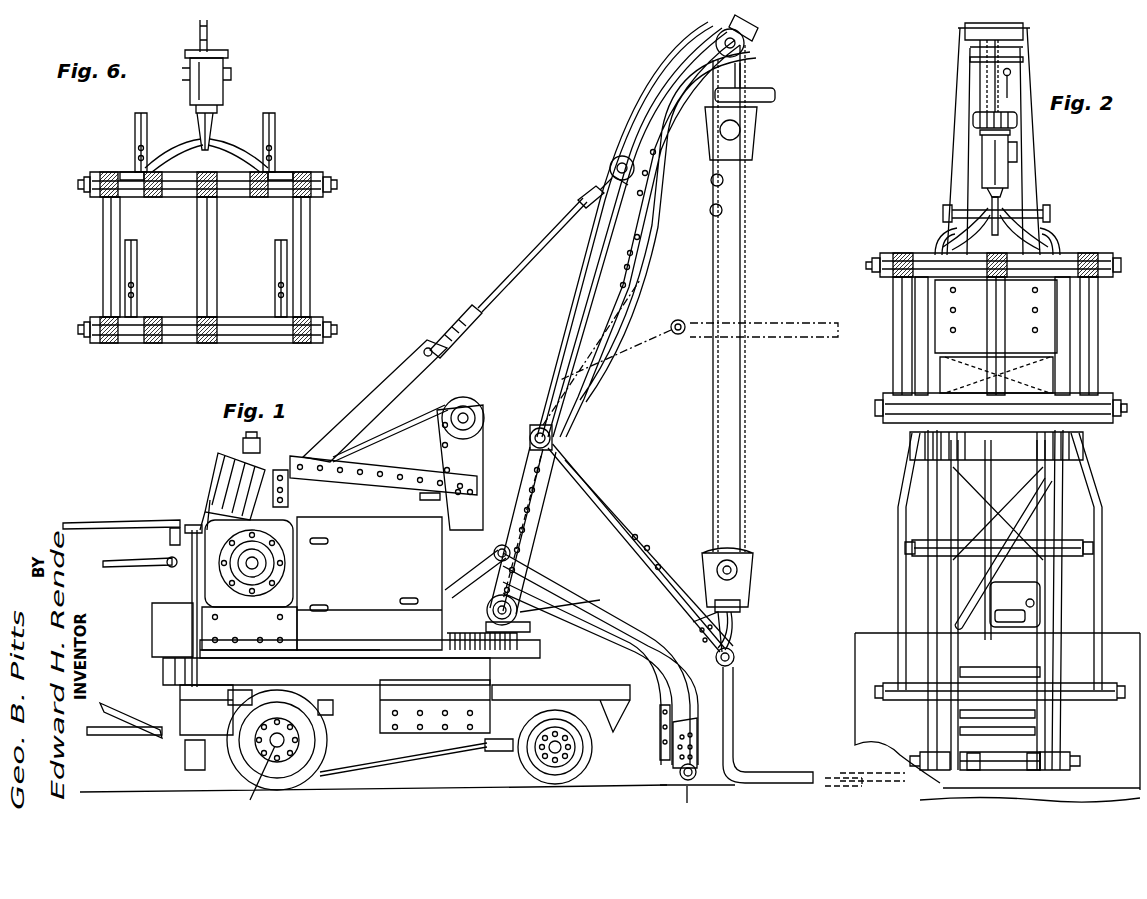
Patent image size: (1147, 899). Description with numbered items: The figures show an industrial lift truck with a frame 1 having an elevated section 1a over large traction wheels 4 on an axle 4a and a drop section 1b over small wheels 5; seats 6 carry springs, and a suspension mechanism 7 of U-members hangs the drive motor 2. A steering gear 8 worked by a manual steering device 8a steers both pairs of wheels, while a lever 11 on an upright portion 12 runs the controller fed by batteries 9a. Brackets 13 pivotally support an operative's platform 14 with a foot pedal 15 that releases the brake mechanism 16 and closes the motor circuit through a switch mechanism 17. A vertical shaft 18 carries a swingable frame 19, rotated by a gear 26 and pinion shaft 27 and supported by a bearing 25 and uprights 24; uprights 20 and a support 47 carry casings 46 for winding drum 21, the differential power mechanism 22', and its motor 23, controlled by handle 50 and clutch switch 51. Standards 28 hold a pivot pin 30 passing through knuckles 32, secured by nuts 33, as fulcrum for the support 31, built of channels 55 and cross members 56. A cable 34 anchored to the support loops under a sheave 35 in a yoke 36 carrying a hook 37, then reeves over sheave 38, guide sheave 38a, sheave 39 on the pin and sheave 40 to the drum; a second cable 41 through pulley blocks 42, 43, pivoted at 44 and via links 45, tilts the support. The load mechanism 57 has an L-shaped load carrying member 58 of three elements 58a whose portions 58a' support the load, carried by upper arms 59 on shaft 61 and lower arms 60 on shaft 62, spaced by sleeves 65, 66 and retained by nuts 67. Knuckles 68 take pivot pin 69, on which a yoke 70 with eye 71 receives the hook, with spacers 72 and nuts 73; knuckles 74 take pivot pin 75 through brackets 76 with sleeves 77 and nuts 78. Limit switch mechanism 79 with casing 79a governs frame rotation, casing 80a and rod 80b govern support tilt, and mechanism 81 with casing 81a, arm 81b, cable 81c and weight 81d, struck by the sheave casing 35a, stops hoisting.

In FIG. 1, the frame 1 is at (356, 660).
In FIG. 1, the elevated section 1a is at (160, 660).
In FIG. 1, the drop section 1b is at (538, 688).
In FIG. 1, the motor 2 is at (240, 693).
In FIG. 1, the wheels 4 is at (290, 788).
In FIG. 1, the axle 4a is at (253, 779).
In FIG. 1, the wheels 5 is at (540, 780).
In FIG. 1, the seats 6 is at (727, 545).
In FIG. 1, the suspension mechanism 7 is at (190, 772).
In FIG. 1, the steering gear 8 is at (529, 440).
In FIG. 1, the manual steering device 8a is at (112, 527).
In FIG. 1, the batteries 9a is at (380, 492).
In FIG. 1, the operating lever 11 is at (135, 565).
In FIG. 1, the upright portion 12 is at (195, 626).
In FIG. 1, the brackets 13 is at (198, 700).
In FIG. 1, the platform 14 is at (125, 736).
In FIG. 1, the foot pedal 15 is at (137, 715).
In FIG. 1, the brake mechanism 16 is at (326, 712).
In FIG. 1, the switch mechanism 17 is at (152, 624).
In FIG. 1, the vertical shaft 18 is at (452, 648).
In FIG. 2, the vertical shaft 18 is at (1010, 723).
In FIG. 1, the frame 19 is at (369, 583).
In FIG. 2, the frame 19 is at (1120, 788).
In FIG. 1, the uprights 20 is at (292, 538).
In FIG. 1, the cable winding drum 21 is at (298, 560).
In FIG. 1, the power mechanism 22' is at (195, 511).
In FIG. 1, the motor 23 is at (212, 458).
In FIG. 1, the uprights 24 is at (470, 568).
In FIG. 2, the uprights 24 is at (1045, 700).
In FIG. 2, the bearing 25 is at (1042, 770).
In FIG. 1, the gear 26 is at (556, 640).
In FIG. 1, the shaft 27 is at (413, 655).
In FIG. 1, the standards 28 is at (517, 625).
In FIG. 2, the standards 28 is at (975, 742).
In FIG. 1, the pivot pin 30 is at (518, 610).
In FIG. 2, the pivot pin 30 is at (1076, 768).
In FIG. 1, the support 31 is at (646, 229).
In FIG. 2, the support 31 is at (1005, 212).
In FIG. 2, the knuckles 32 is at (1068, 760).
In FIG. 1, the nuts 33 is at (555, 590).
In FIG. 2, the nuts 33 is at (920, 770).
In FIG. 6, the cable 34 is at (210, 30).
In FIG. 1, the cable 34 is at (430, 425).
In FIG. 1, the sheave 35 is at (742, 550).
In FIG. 6, the casing 35a is at (214, 63).
In FIG. 1, the casing 35a is at (750, 565).
In FIG. 6, the yoke 36 is at (212, 90).
In FIG. 1, the yoke 36 is at (745, 602).
In FIG. 2, the yoke 36 is at (1000, 162).
In FIG. 6, the hook 37 is at (213, 126).
In FIG. 1, the hook 37 is at (735, 622).
In FIG. 2, the hook 37 is at (1000, 208).
In FIG. 1, the sheave 38 is at (750, 44).
In FIG. 2, the sheave 38 is at (1023, 34).
In FIG. 1, the guide sheave 38a is at (617, 172).
In FIG. 1, the sheave 39 is at (590, 608).
In FIG. 1, the sheave 40 is at (478, 408).
In FIG. 1, the cable 41 is at (530, 255).
In FIG. 1, the pulley block 42 is at (575, 202).
In FIG. 1, the pulley block 43 is at (458, 322).
In FIG. 1, the pivotal connection 44 is at (632, 178).
In FIG. 1, the links 45 is at (378, 380).
In FIG. 1, the casings 46 is at (282, 588).
In FIG. 1, the support 47 is at (282, 470).
In FIG. 1, the operating handle 50 is at (170, 538).
In FIG. 1, the switch 51 is at (530, 455).
In FIG. 1, the channels 55 is at (695, 78).
In FIG. 2, the channels 55 is at (1038, 140).
In FIG. 2, the cross members 56 is at (1038, 503).
In FIG. 1, the load engaging, lifting and transporting mechanism 57 is at (649, 553).
In FIG. 6, the load carrying member 58 is at (238, 265).
In FIG. 1, the load carrying member 58 is at (776, 757).
In FIG. 2, the load carrying member 58 is at (1100, 405).
In FIG. 6, the elements 58a is at (205, 257).
In FIG. 2, the elements 58a is at (1020, 336).
In FIG. 1, the outwardly extending portions 58a' is at (766, 539).
In FIG. 2, the outwardly extending portions 58a' is at (872, 603).
In FIG. 6, the upper arms 59 is at (135, 128).
In FIG. 1, the upper arms 59 is at (648, 500).
In FIG. 2, the upper arms 59 is at (1065, 440).
In FIG. 6, the lower arms 60 is at (133, 255).
In FIG. 1, the lower arms 60 is at (582, 588).
In FIG. 2, the lower arms 60 is at (1104, 565).
In FIG. 2, the shaft 61 is at (1097, 548).
In FIG. 1, the shaft 62 is at (494, 558).
In FIG. 2, the shaft 62 is at (1110, 690).
In FIG. 2, the sleeve 65 is at (1005, 530).
In FIG. 2, the sleeves 66 is at (918, 690).
In FIG. 1, the nuts 67 is at (536, 428).
In FIG. 2, the nuts 67 is at (1086, 545).
In FIG. 6, the knuckles 68 is at (140, 198).
In FIG. 2, the knuckles 68 is at (940, 250).
In FIG. 6, the pivot pin 69 is at (288, 170).
In FIG. 1, the pivot pin 69 is at (735, 652).
In FIG. 2, the pivot pin 69 is at (1121, 265).
In FIG. 6, the yoke 70 is at (238, 153).
In FIG. 2, the yoke 70 is at (1024, 230).
In FIG. 6, the eye 71 is at (185, 150).
In FIG. 2, the eye 71 is at (1020, 240).
In FIG. 6, the spacers 72 is at (125, 175).
In FIG. 2, the spacers 72 is at (1088, 253).
In FIG. 6, the nuts 73 is at (318, 180).
In FIG. 1, the nuts 73 is at (738, 660).
In FIG. 2, the nuts 73 is at (1112, 255).
In FIG. 6, the knuckles 74 is at (150, 343).
In FIG. 2, the knuckles 74 is at (1085, 395).
In FIG. 6, the pivot pin 75 is at (236, 343).
In FIG. 1, the pivot pin 75 is at (683, 782).
In FIG. 2, the pivot pin 75 is at (880, 410).
In FIG. 6, the brackets 76 is at (112, 343).
In FIG. 1, the brackets 76 is at (700, 745).
In FIG. 6, the sleeves 77 is at (158, 318).
In FIG. 2, the sleeves 77 is at (996, 446).
In FIG. 6, the nuts 78 is at (322, 322).
In FIG. 1, the nuts 78 is at (679, 773).
In FIG. 2, the nuts 78 is at (1112, 420).
In FIG. 1, the limit switch mechanism 79 is at (428, 496).
In FIG. 1, the casing 79a is at (355, 492).
In FIG. 1, the casing 80a is at (466, 498).
In FIG. 1, the rod 80b is at (440, 598).
In FIG. 2, the limit switch mechanism 81 is at (1008, 573).
In FIG. 2, the casing 81a is at (1040, 613).
In FIG. 2, the arm 81b is at (1050, 588).
In FIG. 2, the cable 81c is at (992, 485).
In FIG. 1, the weight 81d is at (776, 96).
In FIG. 2, the weight 81d is at (1012, 115).